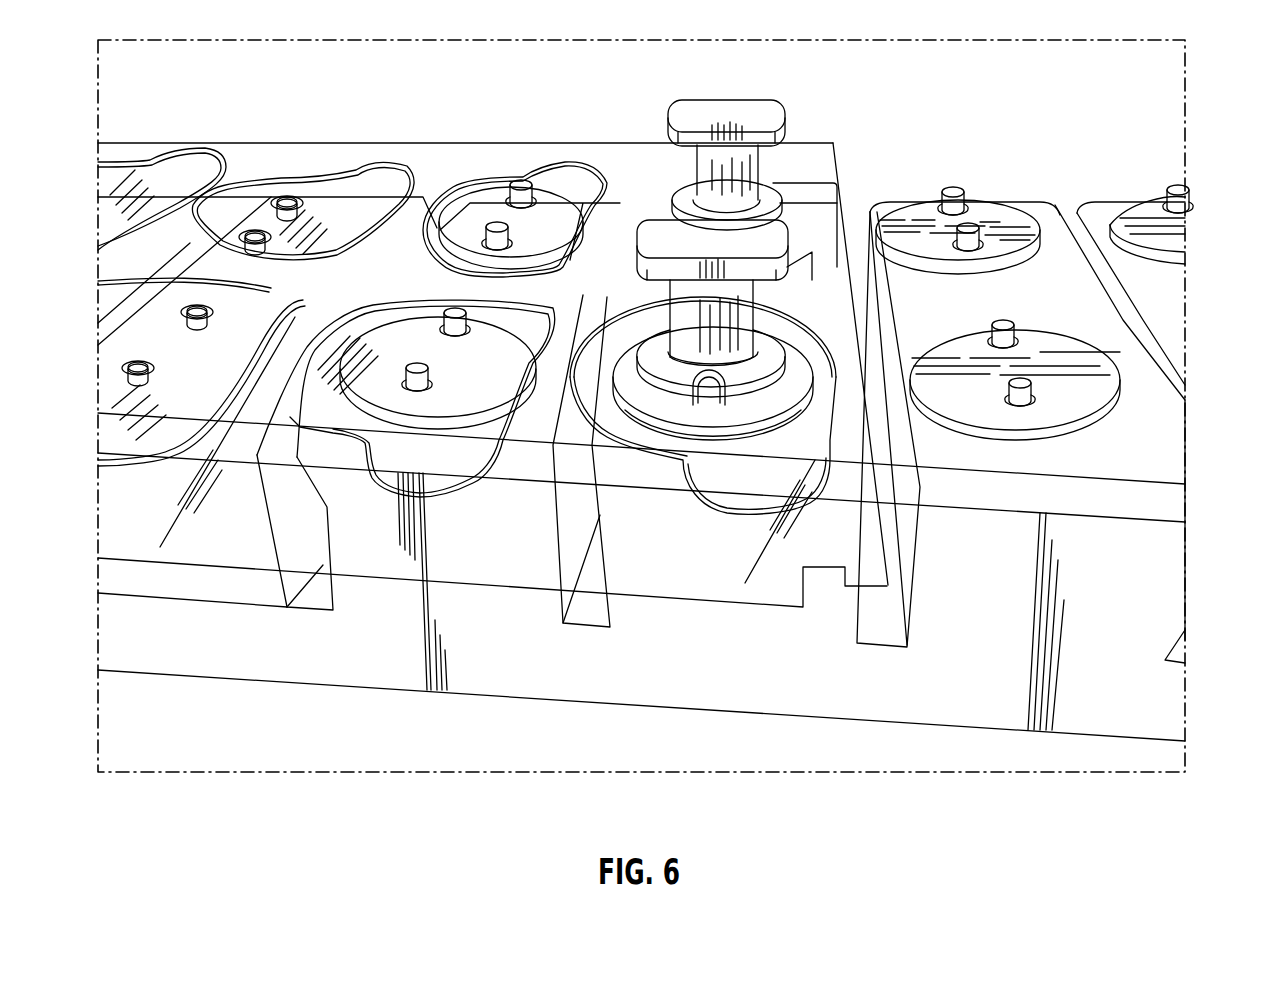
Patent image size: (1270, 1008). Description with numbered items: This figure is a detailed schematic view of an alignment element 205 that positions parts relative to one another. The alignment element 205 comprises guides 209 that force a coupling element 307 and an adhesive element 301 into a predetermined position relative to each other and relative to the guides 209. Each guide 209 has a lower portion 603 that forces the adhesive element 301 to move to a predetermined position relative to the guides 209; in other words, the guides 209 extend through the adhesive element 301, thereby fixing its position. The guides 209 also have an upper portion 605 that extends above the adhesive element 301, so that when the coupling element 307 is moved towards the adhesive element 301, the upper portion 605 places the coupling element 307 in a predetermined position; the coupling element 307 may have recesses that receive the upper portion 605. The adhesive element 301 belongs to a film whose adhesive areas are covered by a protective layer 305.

The alignment element 205 is at (1092, 652).
The guides 209 is at (453, 310).
The adhesive element 301 is at (622, 322).
The protective layer 305 is at (638, 162).
The coupling element 307 is at (748, 314).
The lower portion 603 is at (993, 413).
The upper portion 605 is at (710, 390).